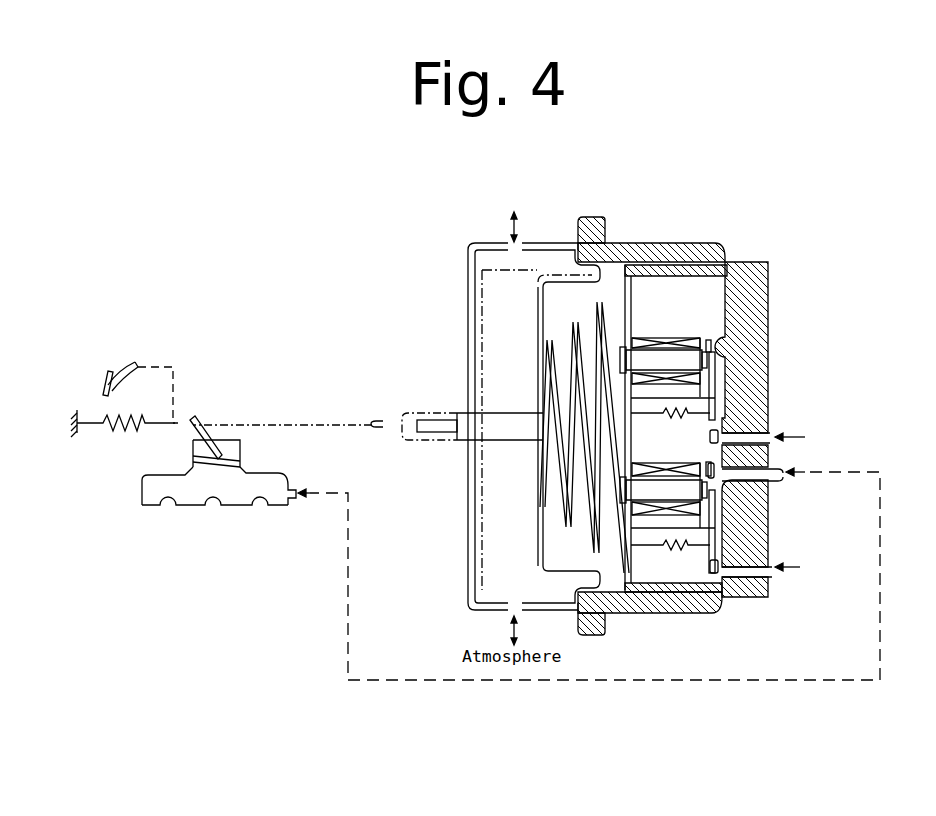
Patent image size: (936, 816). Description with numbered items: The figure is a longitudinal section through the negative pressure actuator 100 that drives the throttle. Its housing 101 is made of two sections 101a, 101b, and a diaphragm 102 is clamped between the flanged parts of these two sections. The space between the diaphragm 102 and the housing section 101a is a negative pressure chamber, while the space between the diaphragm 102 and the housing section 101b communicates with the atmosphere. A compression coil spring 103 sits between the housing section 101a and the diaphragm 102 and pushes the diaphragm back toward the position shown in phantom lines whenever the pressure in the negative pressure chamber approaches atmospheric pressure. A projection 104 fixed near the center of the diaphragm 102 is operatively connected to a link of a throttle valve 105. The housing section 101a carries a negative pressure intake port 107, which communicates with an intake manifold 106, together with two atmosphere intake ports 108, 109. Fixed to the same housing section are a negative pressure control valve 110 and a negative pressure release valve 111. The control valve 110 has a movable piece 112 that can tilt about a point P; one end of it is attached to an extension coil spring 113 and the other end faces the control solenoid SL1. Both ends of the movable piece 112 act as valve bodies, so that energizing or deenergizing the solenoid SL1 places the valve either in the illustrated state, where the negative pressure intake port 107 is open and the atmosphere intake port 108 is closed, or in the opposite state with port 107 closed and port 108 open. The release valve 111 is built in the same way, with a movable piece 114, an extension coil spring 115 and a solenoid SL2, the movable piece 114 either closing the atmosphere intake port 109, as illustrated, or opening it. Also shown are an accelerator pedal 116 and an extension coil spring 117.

The negative pressure actuator 100 is at (832, 358).
The housing 101 is at (596, 382).
The housing section 101a is at (651, 406).
The housing section 101b is at (548, 243).
The diaphragm 102 is at (530, 500).
The compression coil spring 103 is at (575, 333).
The projection 104 is at (466, 426).
The throttle valve 105 is at (193, 460).
The intake manifold 106 is at (240, 505).
The negative pressure intake port 107 is at (776, 480).
The atmosphere intake port 108 is at (767, 578).
The atmosphere intake port 109 is at (770, 434).
The negative pressure control valve 110 is at (688, 564).
The negative pressure release valve 111 is at (703, 301).
The movable piece 112 is at (723, 512).
The extension coil spring 113 is at (667, 553).
The movable piece 114 is at (715, 370).
The extension coil spring 115 is at (685, 414).
The accelerator pedal 116 is at (123, 366).
The extension coil spring 117 is at (113, 430).
The control solenoid SL1 is at (657, 465).
The solenoid SL2 is at (652, 337).
The tilting point P is at (723, 547).